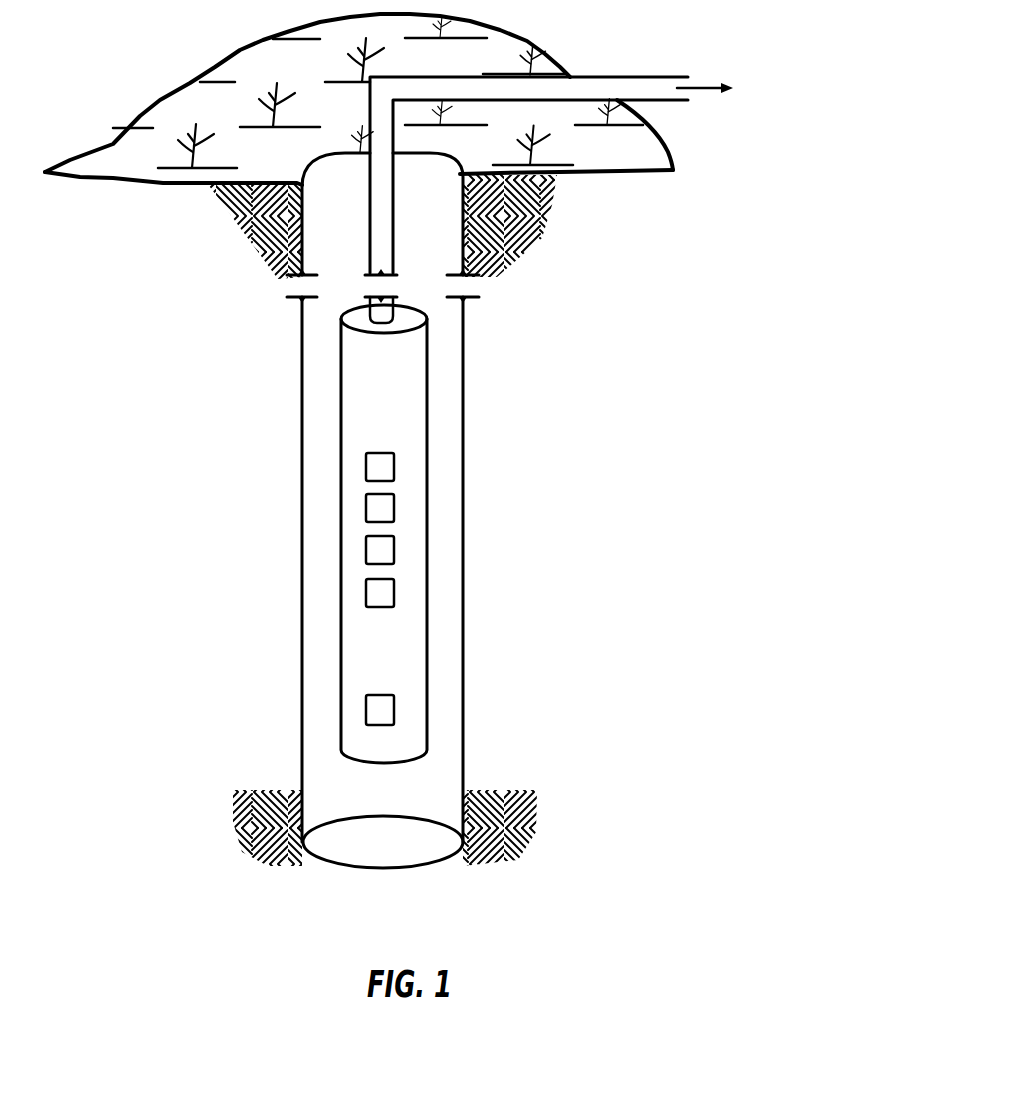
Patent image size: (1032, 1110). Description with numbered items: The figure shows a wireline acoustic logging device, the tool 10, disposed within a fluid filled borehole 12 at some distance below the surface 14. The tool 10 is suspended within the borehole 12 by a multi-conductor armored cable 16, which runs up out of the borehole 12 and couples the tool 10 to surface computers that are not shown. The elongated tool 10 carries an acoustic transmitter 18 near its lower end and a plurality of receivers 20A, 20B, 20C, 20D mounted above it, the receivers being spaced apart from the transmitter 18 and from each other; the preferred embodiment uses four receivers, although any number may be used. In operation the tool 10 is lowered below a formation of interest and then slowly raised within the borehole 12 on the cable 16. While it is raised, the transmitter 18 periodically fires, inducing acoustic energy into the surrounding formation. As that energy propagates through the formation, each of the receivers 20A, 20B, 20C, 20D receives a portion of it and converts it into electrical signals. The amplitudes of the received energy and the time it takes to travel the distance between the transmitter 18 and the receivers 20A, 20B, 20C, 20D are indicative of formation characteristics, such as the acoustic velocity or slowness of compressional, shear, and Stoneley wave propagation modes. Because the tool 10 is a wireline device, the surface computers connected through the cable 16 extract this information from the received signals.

The acoustic logging device 10 is at (398, 408).
The borehole 12 is at (465, 455).
The surface 14 is at (230, 116).
The multi-conductor armored cable 16 is at (395, 233).
The acoustic transmitter 18 is at (365, 710).
The receiver 20A is at (365, 593).
The receiver 20B is at (365, 550).
The receiver 20C is at (365, 508).
The receiver 20D is at (365, 467).